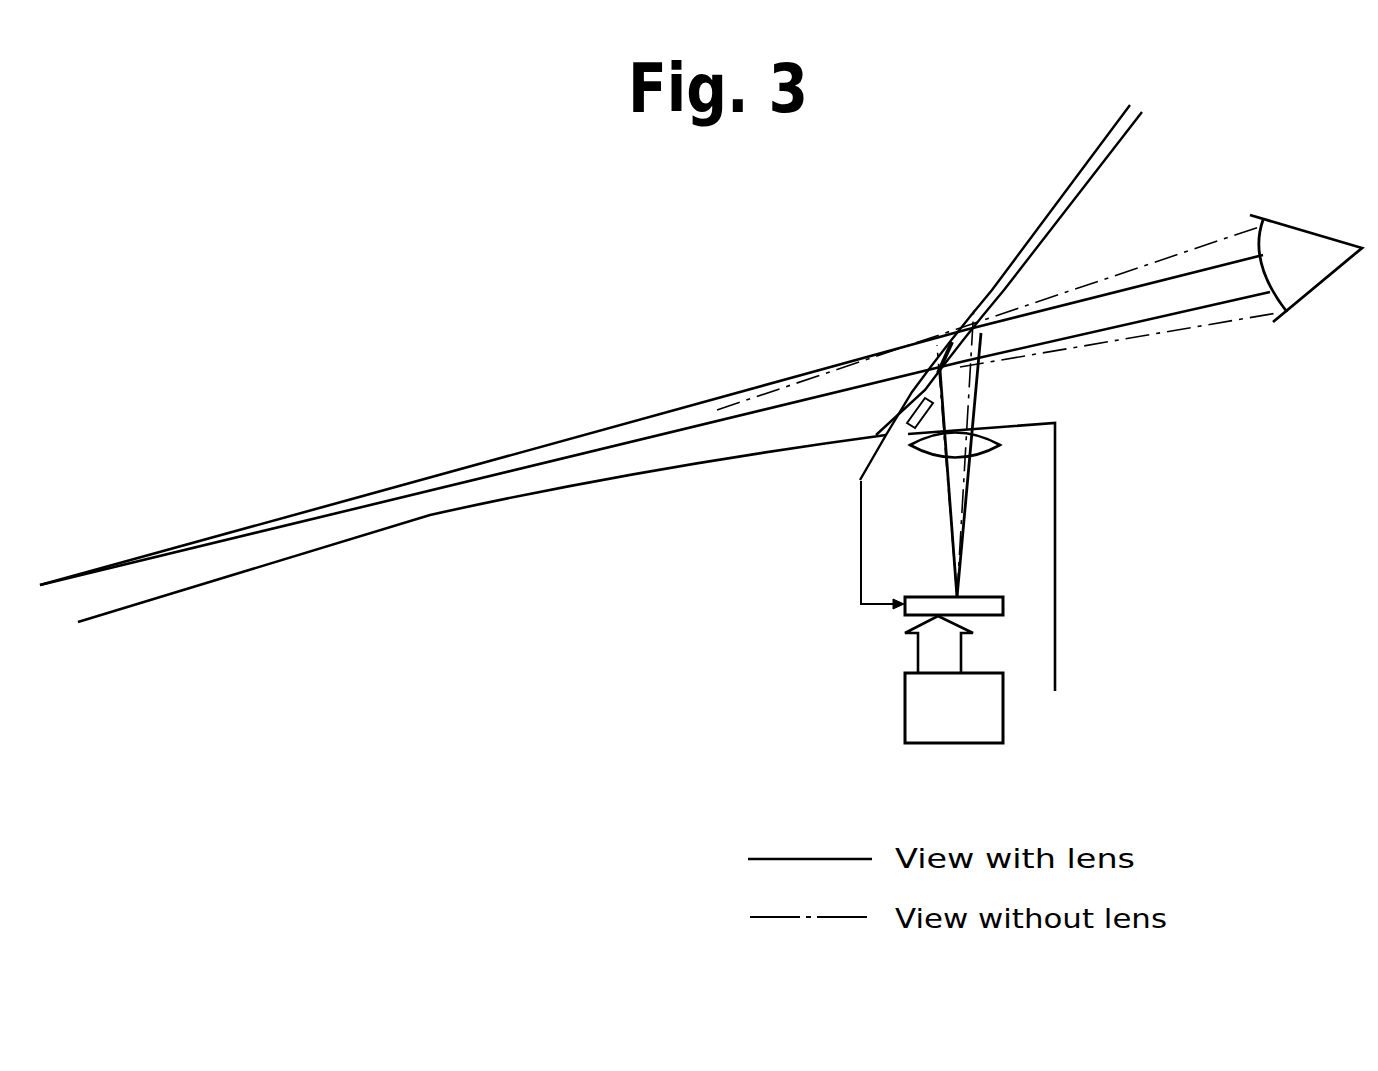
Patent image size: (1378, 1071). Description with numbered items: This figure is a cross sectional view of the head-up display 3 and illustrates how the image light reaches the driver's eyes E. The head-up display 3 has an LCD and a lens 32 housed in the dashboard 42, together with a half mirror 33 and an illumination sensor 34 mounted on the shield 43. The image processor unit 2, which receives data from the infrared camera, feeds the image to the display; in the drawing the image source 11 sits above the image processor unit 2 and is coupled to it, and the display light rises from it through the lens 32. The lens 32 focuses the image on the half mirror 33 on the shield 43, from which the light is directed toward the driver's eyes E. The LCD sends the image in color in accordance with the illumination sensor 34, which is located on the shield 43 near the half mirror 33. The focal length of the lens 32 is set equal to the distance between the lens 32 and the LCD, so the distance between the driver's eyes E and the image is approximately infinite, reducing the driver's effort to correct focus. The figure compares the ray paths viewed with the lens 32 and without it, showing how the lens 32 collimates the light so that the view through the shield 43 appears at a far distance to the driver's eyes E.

The image processor unit 2 is at (905, 711).
The head-up display 3 is at (838, 572).
The display plate 11 is at (1003, 592).
The lens 32 is at (996, 444).
The half mirror 33 is at (946, 340).
The illumination sensor 34 is at (910, 425).
The dashboard 42 is at (1050, 422).
The shield 43 is at (1074, 178).
The driver's eyes E is at (1307, 230).